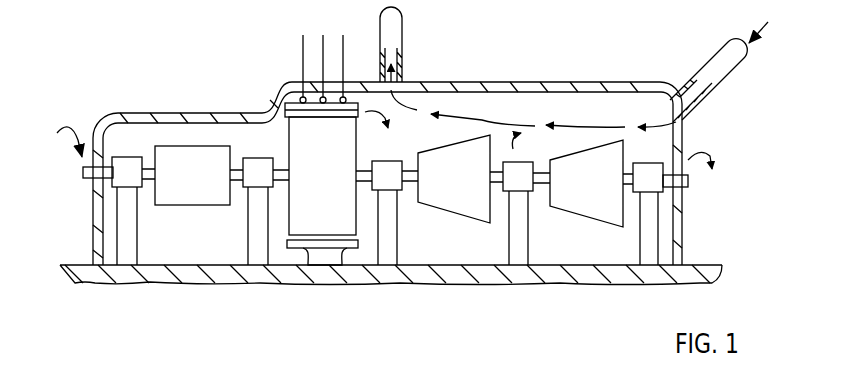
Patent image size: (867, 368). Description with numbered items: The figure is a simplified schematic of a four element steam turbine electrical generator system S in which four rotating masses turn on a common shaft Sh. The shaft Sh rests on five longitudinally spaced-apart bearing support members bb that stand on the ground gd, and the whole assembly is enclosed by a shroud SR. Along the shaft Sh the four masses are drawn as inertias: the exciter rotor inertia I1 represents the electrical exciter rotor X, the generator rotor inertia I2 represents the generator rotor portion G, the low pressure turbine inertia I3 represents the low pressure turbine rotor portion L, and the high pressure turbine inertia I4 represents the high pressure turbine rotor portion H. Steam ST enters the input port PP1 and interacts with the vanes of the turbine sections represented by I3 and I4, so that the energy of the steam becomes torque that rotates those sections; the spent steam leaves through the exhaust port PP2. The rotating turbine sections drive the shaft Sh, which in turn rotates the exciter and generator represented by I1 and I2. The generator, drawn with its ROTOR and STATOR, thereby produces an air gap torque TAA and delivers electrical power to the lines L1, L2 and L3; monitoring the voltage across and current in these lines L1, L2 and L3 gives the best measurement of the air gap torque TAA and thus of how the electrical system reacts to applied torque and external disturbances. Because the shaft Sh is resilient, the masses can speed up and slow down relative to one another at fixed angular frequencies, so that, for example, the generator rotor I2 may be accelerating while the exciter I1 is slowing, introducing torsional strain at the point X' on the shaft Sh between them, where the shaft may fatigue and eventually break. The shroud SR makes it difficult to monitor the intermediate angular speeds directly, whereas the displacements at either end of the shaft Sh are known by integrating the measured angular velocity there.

The exciter rotor inertia I1 is at (213, 204).
The electrical exciter rotor X is at (192, 176).
The shaft strain point X' is at (225, 212).
The air gap torque TAA is at (270, 102).
The first electrical power line L1 is at (301, 44).
The second electrical power line L2 is at (322, 38).
The third electrical power line L3 is at (340, 38).
The exhaust port PP2 is at (395, 32).
The steam turbine electrical generator system S is at (464, 23).
The shroud SR is at (546, 80).
The steam ST is at (769, 31).
The input port PP1 is at (718, 84).
The generator rotor ROTOR is at (321, 169).
The generator rotor inertia I2 is at (321, 169).
The electrical generator rotor portion G is at (351, 212).
The common shaft Sh is at (408, 168).
The low pressure turbine rotor inertia I3 is at (477, 213).
The low pressure turbine rotor portion L is at (454, 179).
The high pressure turbine rotor inertia I4 is at (611, 214).
The high pressure turbine rotor portion H is at (586, 183).
The bearing support member bb is at (399, 213).
The generator stator STATOR is at (353, 249).
The ground gd is at (647, 284).